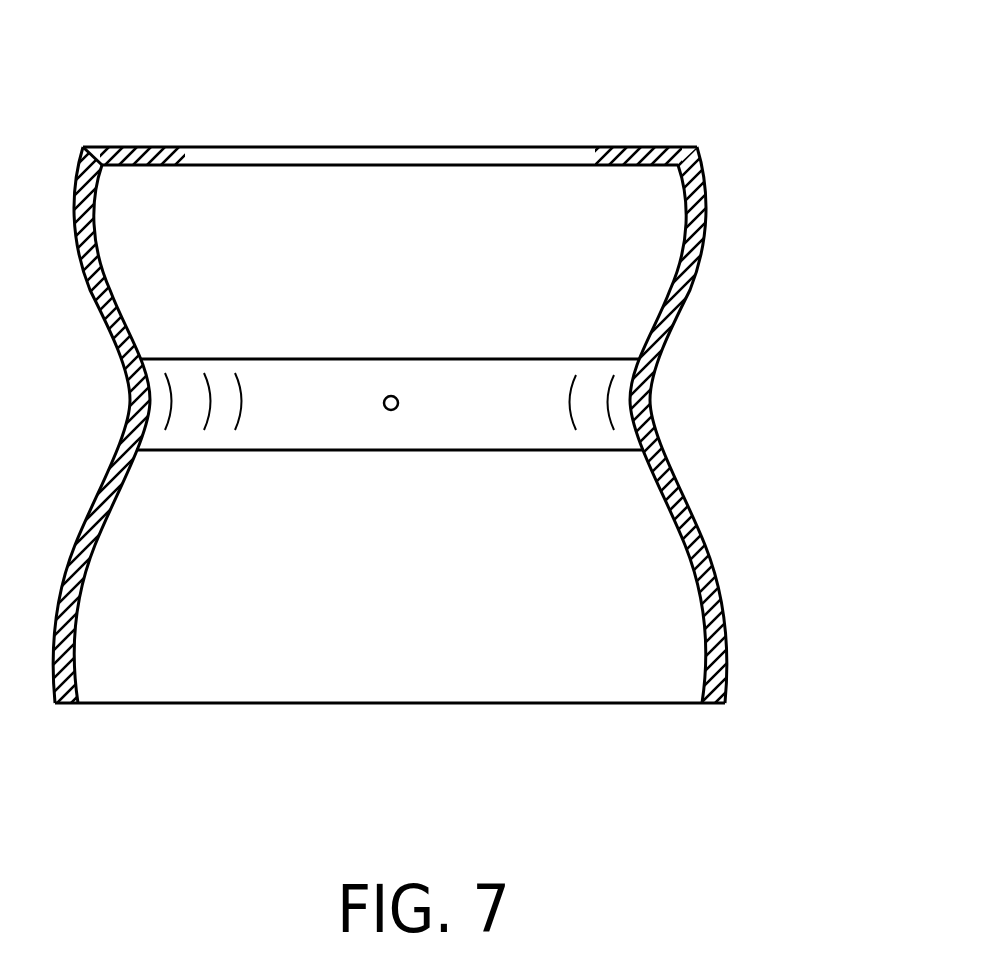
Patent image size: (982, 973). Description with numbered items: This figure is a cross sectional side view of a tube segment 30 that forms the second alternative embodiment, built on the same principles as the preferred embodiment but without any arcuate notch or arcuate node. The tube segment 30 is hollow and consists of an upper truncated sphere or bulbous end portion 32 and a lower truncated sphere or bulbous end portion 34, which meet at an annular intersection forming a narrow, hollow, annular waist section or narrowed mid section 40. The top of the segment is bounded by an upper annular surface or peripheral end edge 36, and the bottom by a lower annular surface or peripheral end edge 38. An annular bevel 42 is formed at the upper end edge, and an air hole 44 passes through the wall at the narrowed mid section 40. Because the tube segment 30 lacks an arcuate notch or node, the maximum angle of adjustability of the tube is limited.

The tube segment 30 is at (753, 152).
The upper bulbous end portion 32 is at (707, 230).
The lower bulbous end portion 34 is at (728, 608).
The upper peripheral end edge 36 is at (435, 147).
The lower peripheral end edge 38 is at (280, 704).
The narrowed mid section 40 is at (650, 400).
The annular bevel 42 is at (97, 147).
The air hole 44 is at (395, 410).